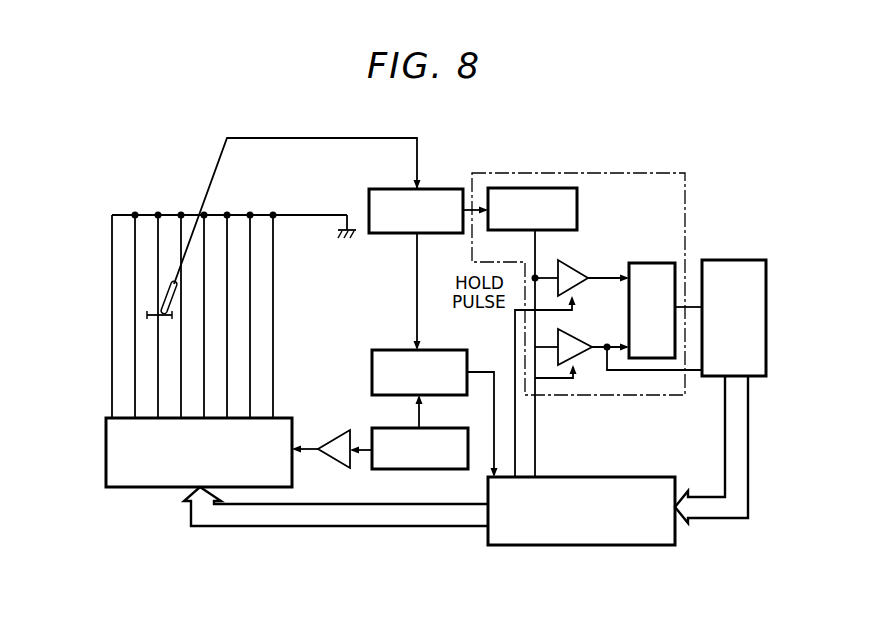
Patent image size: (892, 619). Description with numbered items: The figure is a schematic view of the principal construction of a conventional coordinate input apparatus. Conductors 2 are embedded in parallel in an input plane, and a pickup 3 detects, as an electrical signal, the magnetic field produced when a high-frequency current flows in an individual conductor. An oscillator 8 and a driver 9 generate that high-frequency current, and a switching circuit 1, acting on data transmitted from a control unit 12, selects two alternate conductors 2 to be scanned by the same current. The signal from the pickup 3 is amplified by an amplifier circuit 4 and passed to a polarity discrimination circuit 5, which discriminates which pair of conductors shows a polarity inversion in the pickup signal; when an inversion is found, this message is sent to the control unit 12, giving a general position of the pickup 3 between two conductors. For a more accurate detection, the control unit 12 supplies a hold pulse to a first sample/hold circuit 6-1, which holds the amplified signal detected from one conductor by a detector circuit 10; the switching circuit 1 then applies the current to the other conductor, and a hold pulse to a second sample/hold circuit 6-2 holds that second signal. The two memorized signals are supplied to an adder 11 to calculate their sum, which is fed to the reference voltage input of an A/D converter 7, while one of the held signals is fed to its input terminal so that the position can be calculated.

The switching circuit 1 is at (130, 489).
The conductors 2 is at (112, 333).
The pickup 3 is at (173, 284).
The amplifier circuit 4 is at (450, 188).
The polarity discrimination circuit 5 is at (460, 350).
The sample/hold circuit 6-1 is at (571, 262).
The sample/hold circuit 6-2 is at (573, 329).
The A/D converter 7 is at (749, 259).
The oscillator 8 is at (468, 437).
The driver 9 is at (340, 437).
The detector circuit 10 is at (578, 192).
The adder 11 is at (661, 262).
The control unit 12 is at (662, 476).